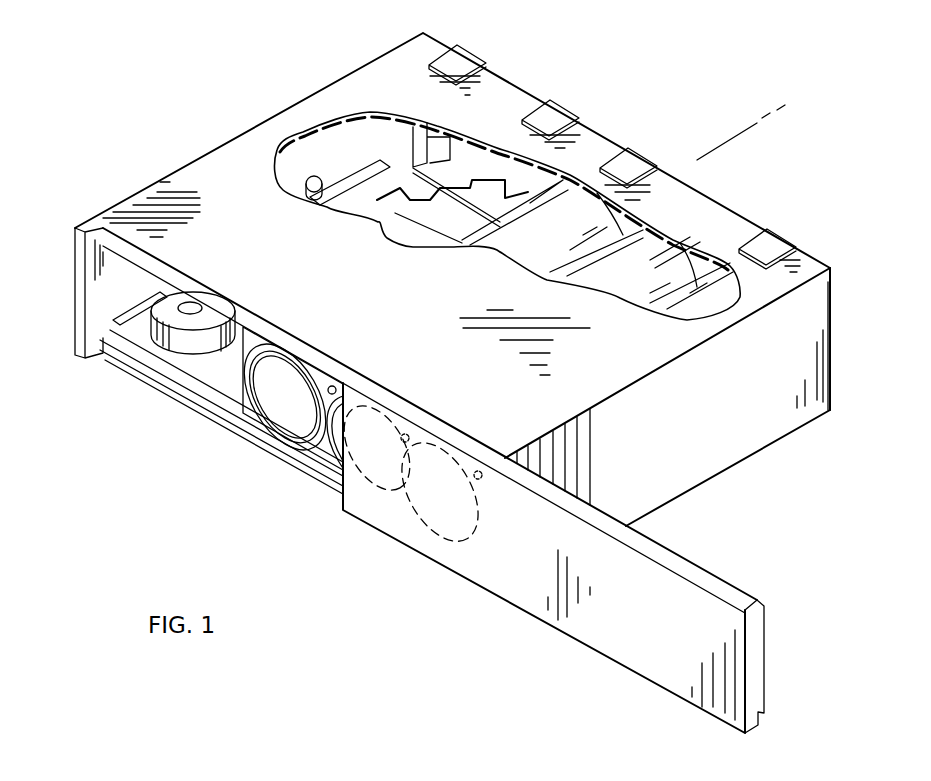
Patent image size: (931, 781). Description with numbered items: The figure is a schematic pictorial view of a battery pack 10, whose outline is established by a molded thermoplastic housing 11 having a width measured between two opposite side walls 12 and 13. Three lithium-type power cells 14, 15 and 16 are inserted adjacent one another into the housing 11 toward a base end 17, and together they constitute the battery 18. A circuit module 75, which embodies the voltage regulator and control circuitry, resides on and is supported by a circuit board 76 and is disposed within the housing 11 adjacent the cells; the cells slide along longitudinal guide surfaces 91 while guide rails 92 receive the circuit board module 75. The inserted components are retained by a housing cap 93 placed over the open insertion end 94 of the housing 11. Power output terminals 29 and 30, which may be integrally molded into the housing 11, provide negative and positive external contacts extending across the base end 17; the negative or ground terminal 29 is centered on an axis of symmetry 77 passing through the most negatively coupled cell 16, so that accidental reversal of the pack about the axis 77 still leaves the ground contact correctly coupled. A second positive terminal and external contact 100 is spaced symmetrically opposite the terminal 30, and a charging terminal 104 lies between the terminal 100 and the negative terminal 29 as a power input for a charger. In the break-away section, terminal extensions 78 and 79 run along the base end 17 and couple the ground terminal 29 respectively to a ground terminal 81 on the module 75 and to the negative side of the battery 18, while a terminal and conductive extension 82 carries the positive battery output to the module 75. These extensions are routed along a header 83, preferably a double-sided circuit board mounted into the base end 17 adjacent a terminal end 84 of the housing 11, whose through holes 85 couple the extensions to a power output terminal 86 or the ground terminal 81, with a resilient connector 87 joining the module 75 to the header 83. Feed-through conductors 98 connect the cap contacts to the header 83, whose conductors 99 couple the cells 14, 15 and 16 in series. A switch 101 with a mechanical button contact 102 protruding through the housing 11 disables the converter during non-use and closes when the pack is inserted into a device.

The battery pack 10 is at (722, 101).
The housing 11 is at (742, 482).
The side wall 12 is at (217, 147).
The side wall 13 is at (652, 502).
The power cell 14 is at (422, 533).
The power cell 15 is at (343, 468).
The power cell 16 is at (296, 440).
The base end 17 is at (813, 255).
The battery 18 is at (722, 298).
The negative power output terminal 29 is at (726, 123).
The positive power output terminal 30 is at (770, 235).
The circuit module 75 is at (143, 335).
The circuit board 76 is at (237, 428).
The axis of symmetry 77 is at (215, 447).
The terminal extension 78 is at (492, 165).
The terminal extension 79 is at (490, 190).
The ground terminal 81 is at (455, 190).
The terminal and conductive extension 82 is at (410, 195).
The header 83 is at (370, 110).
The terminal end 84 is at (715, 238).
The through holes 85 is at (413, 147).
The power output terminal 86 is at (418, 130).
The resilient connector 87 is at (440, 205).
The longitudinal guide surfaces 91 is at (260, 343).
The guide rails 92 is at (123, 308).
The housing cap 93 is at (622, 623).
The open insertion end 94 is at (160, 260).
The feed-through conductors 98 is at (334, 384).
The conductors 99 is at (622, 225).
The terminal and external contact 100 is at (463, 60).
The switch 101 is at (365, 205).
The mechanical button contact 102 is at (310, 180).
The charging terminal 104 is at (557, 110).